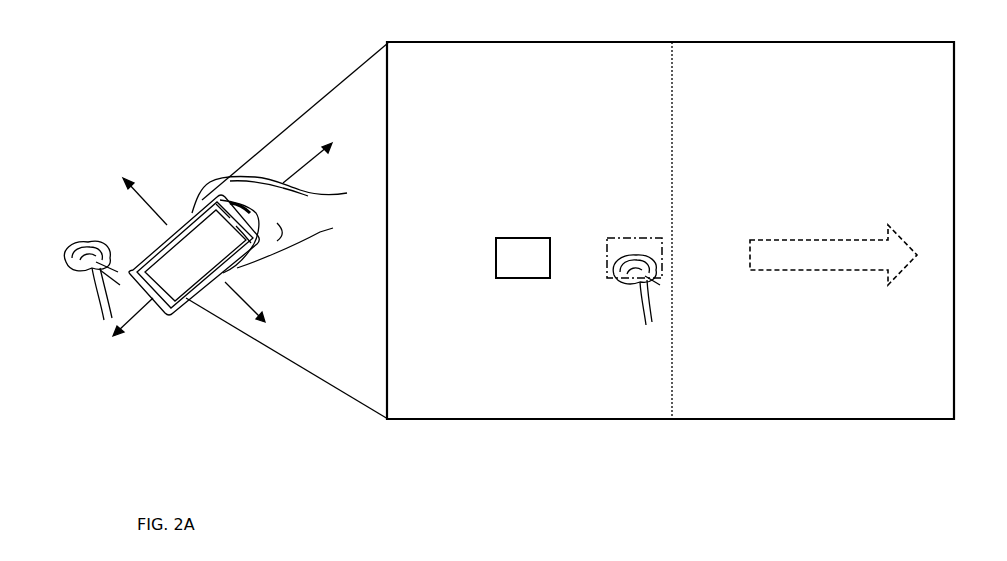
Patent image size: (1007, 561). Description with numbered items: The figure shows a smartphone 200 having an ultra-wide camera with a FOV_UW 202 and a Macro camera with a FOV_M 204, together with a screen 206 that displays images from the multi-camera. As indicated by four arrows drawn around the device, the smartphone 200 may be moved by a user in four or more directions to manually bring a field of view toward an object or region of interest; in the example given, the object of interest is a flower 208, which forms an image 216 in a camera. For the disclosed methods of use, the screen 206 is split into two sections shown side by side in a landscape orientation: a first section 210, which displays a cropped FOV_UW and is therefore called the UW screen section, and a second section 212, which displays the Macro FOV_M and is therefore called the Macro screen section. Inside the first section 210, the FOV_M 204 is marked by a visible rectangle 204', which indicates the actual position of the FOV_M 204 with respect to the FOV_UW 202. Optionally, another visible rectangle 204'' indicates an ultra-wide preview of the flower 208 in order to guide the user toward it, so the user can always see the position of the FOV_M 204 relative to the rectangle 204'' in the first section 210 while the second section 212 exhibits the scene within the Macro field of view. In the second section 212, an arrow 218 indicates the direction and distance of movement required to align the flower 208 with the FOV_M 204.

The smartphone 200 is at (167, 195).
The FOV_UW 202 is at (419, 70).
The FOV_M 204 is at (716, 69).
The rectangle 204' is at (523, 243).
The rectangle 204'' is at (634, 243).
The screen 206 is at (183, 273).
The flower 208 is at (87, 230).
The first section 210 is at (450, 400).
The second section 212 is at (812, 405).
The image 216 is at (612, 310).
The arrow 218 is at (810, 273).